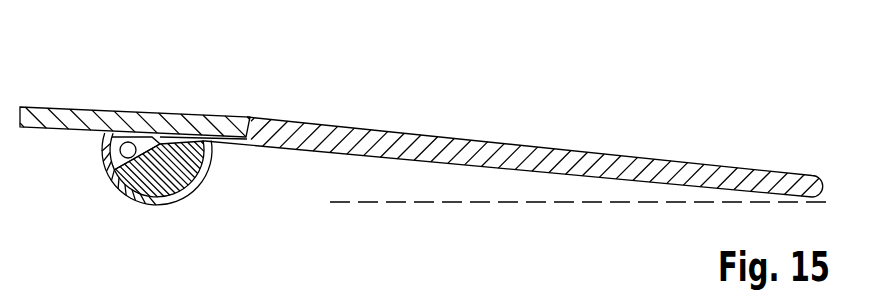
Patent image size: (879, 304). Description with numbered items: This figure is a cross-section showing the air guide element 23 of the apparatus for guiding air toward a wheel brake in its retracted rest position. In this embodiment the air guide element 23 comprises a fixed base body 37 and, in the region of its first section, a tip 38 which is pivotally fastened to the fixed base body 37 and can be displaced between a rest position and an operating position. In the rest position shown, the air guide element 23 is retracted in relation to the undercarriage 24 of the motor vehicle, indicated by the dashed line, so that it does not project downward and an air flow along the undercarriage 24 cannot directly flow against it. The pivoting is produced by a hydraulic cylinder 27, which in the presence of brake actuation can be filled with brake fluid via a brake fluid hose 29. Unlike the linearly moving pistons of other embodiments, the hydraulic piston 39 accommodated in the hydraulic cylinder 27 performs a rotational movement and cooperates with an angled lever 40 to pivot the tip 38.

The air guide element 23 is at (421, 116).
The undercarriage 24 is at (432, 206).
The hydraulic cylinder 27 is at (136, 209).
The brake fluid hose 29 is at (106, 164).
The fixed base body 37 is at (123, 116).
The tip 38 is at (529, 139).
The hydraulic piston 39 is at (196, 195).
The angled lever 40 is at (228, 143).